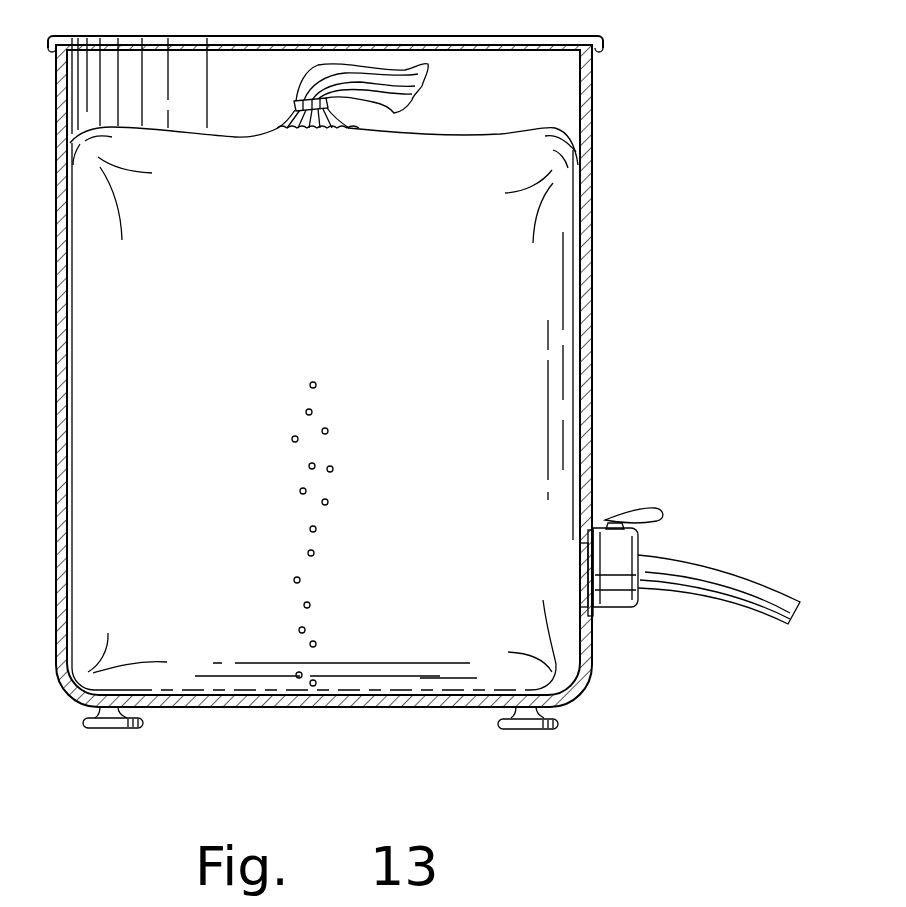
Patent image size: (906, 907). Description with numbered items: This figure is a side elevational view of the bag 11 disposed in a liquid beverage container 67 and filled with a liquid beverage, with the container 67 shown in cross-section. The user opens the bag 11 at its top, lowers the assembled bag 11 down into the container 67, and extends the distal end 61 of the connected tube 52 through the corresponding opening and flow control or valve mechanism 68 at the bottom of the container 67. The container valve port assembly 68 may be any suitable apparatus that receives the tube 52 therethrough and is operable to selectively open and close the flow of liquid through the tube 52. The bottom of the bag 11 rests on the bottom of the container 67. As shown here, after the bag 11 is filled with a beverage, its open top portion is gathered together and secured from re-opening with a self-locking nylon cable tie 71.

The bag 11 is at (200, 130).
The self-locking nylon cable tie 71 is at (294, 104).
The beverage container 67 is at (594, 118).
The valve mechanism 68 is at (615, 611).
The distal end 61 is at (793, 592).
The tube 52 is at (723, 598).